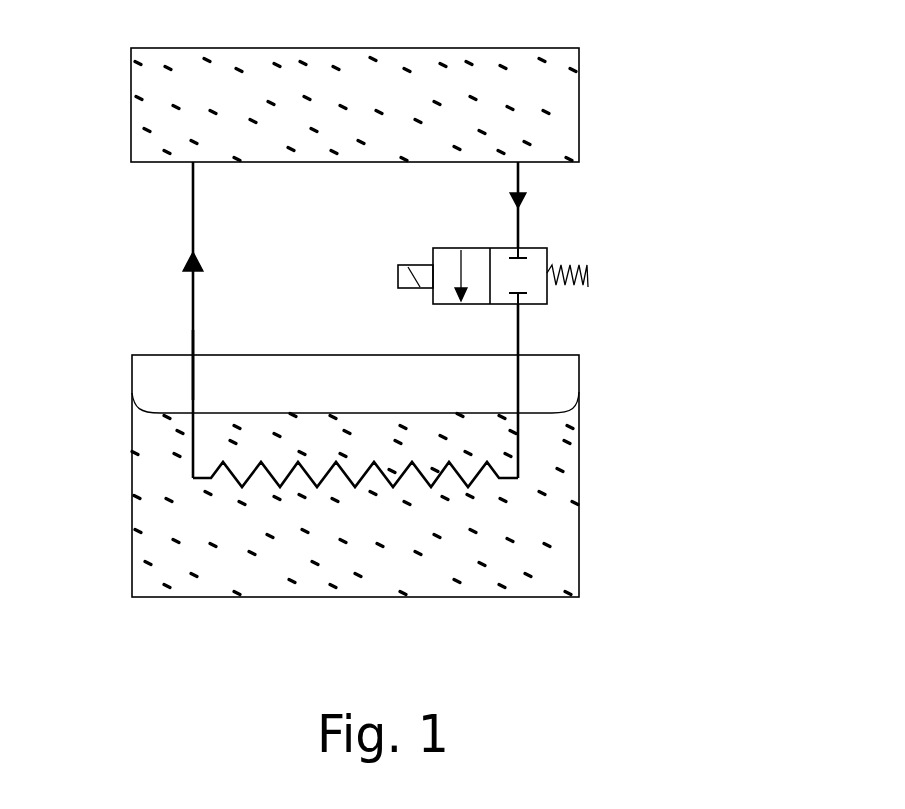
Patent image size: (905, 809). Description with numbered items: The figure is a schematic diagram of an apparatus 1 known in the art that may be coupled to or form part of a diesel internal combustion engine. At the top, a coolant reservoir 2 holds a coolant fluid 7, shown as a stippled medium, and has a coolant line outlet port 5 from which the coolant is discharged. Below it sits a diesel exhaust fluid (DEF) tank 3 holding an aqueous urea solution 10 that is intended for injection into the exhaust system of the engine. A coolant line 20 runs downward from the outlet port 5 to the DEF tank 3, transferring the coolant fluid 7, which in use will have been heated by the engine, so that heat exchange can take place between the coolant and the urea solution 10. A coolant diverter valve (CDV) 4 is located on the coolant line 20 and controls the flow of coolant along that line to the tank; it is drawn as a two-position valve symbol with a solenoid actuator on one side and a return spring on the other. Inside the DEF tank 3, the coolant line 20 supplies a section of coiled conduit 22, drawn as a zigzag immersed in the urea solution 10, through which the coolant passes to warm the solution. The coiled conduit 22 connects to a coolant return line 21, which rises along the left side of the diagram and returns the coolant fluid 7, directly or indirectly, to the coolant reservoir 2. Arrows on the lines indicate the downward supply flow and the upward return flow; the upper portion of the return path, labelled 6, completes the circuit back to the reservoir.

The apparatus 1 is at (754, 72).
The coolant reservoir 2 is at (580, 74).
The diesel exhaust fluid (DEF) tank 3 is at (580, 453).
The coolant diverter valve (CDV) 4 is at (547, 255).
The coolant line outlet port 5 is at (521, 182).
The return line 6 is at (192, 194).
The coolant fluid 7 is at (157, 65).
The aqueous urea solution 10 is at (548, 540).
The coolant line 20 is at (520, 333).
The coolant return line 21 is at (192, 312).
The coiled conduit 22 is at (318, 487).